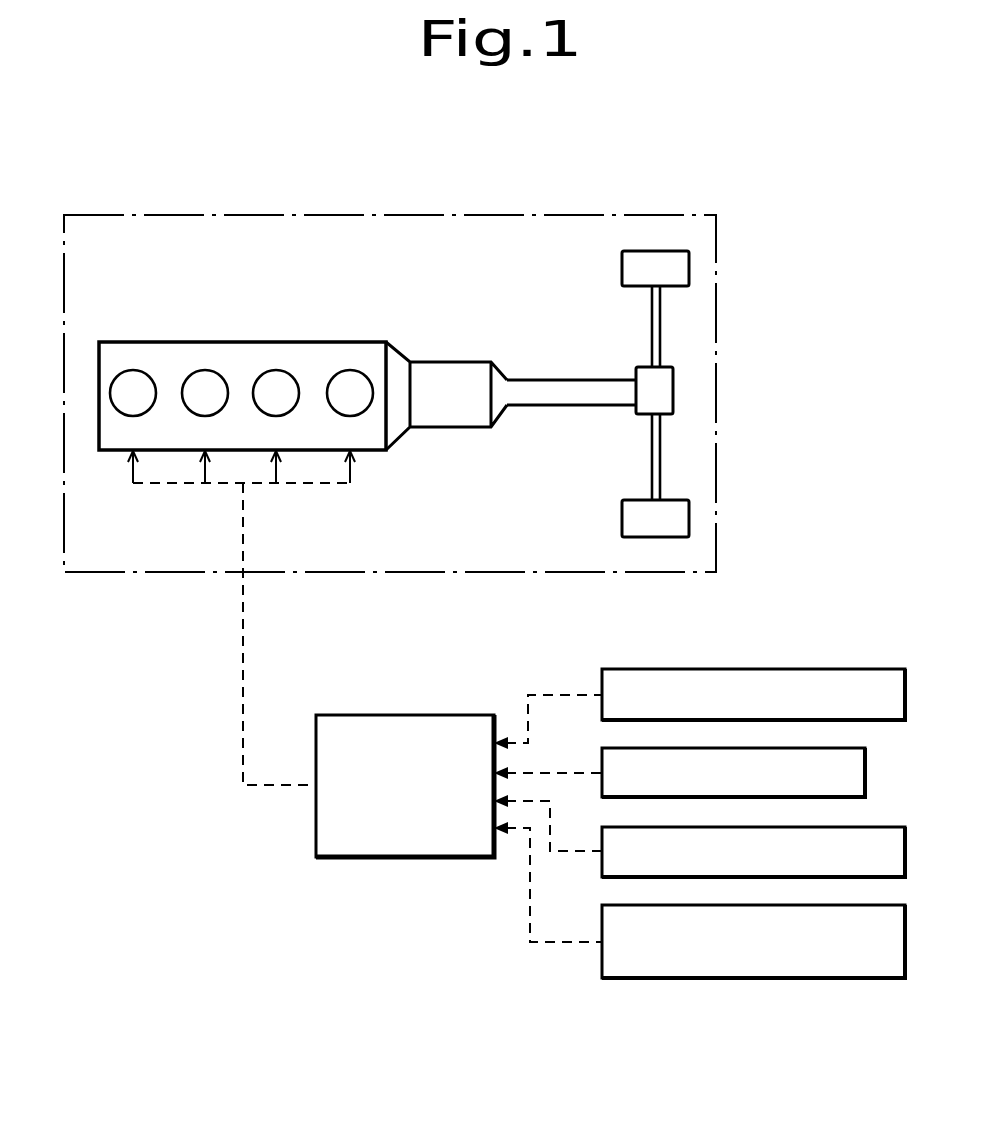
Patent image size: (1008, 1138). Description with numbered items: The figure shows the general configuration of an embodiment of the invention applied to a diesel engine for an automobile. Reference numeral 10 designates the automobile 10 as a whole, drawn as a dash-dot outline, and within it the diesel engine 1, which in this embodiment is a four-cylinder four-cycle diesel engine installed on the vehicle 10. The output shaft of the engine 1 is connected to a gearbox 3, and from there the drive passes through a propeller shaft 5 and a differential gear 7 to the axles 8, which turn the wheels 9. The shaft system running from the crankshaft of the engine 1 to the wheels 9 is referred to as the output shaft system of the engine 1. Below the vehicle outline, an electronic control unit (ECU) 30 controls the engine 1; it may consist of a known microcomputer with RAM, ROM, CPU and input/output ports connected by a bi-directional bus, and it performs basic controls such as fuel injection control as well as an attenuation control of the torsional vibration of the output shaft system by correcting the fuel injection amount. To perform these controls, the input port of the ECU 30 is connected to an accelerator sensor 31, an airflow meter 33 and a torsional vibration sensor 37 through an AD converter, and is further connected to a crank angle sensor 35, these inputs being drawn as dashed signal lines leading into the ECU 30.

The diesel engine 1 is at (310, 341).
The gearbox 3 is at (447, 370).
The propeller shaft 5 is at (543, 385).
The differential gear 7 is at (673, 390).
The axles 8 is at (652, 325).
The wheels 9 is at (689, 266).
The automobile 10 is at (592, 213).
The electronic control unit 30 is at (412, 857).
The accelerator sensor 31 is at (602, 683).
The airflow meter 33 is at (602, 763).
The crank angle sensor 35 is at (602, 840).
The torsional vibration sensor 37 is at (602, 918).